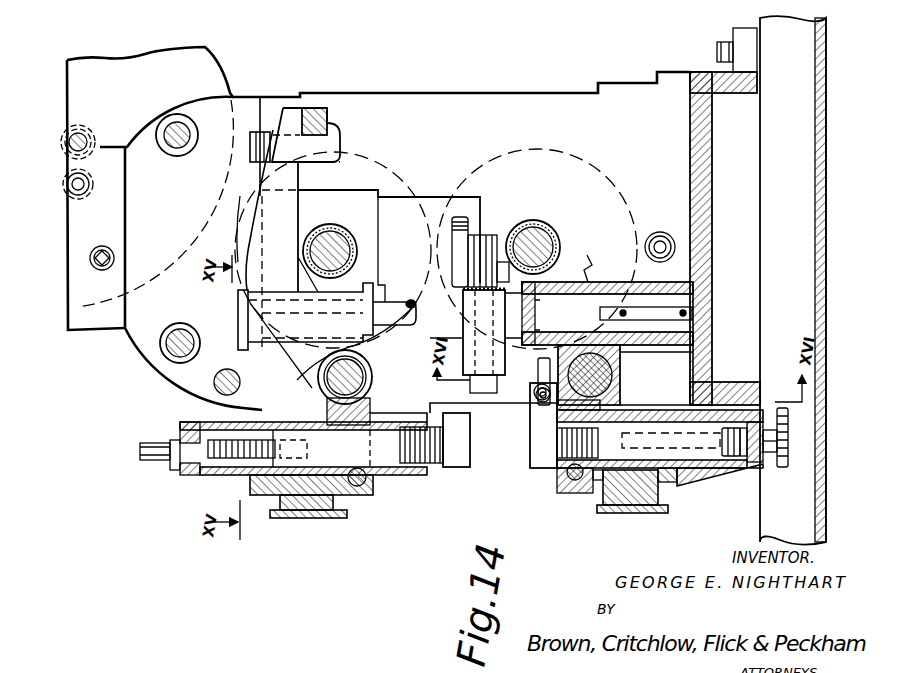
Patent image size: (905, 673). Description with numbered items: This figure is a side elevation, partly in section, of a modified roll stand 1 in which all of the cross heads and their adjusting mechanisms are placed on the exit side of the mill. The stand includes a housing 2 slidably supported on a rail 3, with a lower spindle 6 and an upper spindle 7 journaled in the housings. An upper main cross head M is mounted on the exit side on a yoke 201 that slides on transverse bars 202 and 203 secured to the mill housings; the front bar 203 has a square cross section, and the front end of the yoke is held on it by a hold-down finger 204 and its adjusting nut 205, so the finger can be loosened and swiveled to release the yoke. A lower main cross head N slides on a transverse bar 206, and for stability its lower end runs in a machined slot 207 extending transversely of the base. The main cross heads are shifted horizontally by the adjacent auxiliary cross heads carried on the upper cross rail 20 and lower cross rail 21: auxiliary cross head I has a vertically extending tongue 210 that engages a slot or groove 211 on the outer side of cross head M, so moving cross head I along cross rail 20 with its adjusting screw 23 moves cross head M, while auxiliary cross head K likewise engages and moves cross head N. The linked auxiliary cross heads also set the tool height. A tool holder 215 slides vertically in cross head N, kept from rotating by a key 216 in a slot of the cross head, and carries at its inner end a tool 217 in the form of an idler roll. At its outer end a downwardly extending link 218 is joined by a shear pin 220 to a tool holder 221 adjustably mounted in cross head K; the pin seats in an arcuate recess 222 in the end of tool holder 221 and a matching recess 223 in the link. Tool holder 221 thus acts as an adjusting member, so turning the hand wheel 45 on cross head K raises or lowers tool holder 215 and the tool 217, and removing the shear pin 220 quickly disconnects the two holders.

The roll stand 1 is at (688, 70).
The housing 2 is at (259, 98).
The rail 3 is at (796, 171).
The lower spindle 6 is at (532, 221).
The upper spindle 7 is at (328, 237).
The upper cross rail 20 is at (316, 518).
The lower cross rail 21 is at (637, 513).
The adjusting screw 23 is at (358, 486).
The hand wheel 45 is at (783, 470).
The yoke 201 is at (255, 208).
The transverse bar 202 is at (411, 315).
The front bar 203 is at (313, 108).
The hold-down finger 204 is at (340, 152).
The adjusting nut 205 is at (250, 140).
The transverse bar 206 is at (630, 392).
The machined slot 207 is at (690, 342).
The tongue 210 is at (310, 325).
The slot or groove 211 is at (330, 390).
The tool holder 215 is at (465, 306).
The key 216 is at (645, 307).
The tool 217 is at (459, 218).
The link 218 is at (533, 395).
The shear pin 220 is at (600, 312).
The tool holder 221 is at (455, 460).
The arcuate recess 222 is at (537, 403).
The recess 223 is at (536, 317).
The auxiliary cross head I is at (190, 480).
The auxiliary cross head K is at (717, 486).
The upper main cross head M is at (283, 355).
The lower main cross head N is at (583, 266).